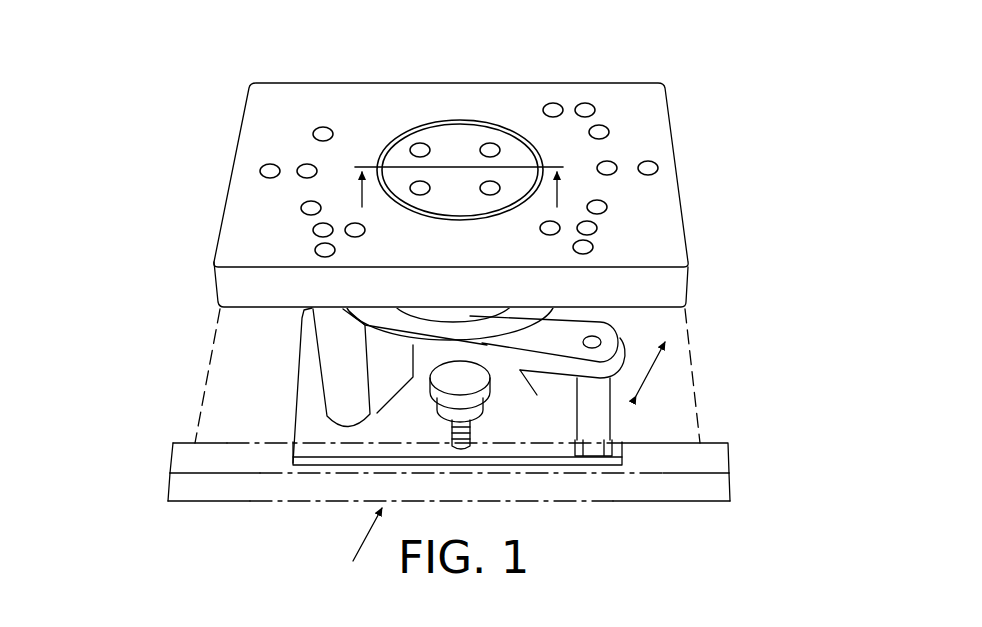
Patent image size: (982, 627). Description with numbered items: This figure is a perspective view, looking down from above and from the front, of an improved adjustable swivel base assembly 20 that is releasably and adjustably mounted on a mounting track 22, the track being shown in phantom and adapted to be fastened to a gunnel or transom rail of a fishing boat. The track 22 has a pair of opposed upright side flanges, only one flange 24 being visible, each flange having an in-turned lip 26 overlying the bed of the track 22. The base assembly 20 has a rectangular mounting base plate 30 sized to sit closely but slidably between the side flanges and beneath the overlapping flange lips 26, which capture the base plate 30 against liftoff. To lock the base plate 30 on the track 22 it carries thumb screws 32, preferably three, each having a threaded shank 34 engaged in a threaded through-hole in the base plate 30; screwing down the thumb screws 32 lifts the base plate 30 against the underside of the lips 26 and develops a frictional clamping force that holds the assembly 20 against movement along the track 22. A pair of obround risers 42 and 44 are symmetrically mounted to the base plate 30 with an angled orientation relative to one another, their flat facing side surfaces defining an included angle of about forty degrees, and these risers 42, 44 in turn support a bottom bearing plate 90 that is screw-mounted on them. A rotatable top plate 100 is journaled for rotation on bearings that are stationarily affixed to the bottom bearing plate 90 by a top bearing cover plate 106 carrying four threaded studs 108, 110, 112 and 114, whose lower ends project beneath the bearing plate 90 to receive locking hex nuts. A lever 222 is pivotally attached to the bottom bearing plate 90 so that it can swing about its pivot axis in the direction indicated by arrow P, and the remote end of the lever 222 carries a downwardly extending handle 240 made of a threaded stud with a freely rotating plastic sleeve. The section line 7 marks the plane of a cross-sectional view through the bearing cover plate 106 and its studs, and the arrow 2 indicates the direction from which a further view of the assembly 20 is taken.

The adjustable swivel base assembly 20 is at (195, 82).
The rotatable top plate 100 is at (240, 212).
The top bearing cover plate 106 is at (453, 142).
The threaded stud 108 is at (397, 152).
The threaded stud 110 is at (418, 146).
The threaded stud 112 is at (496, 192).
The threaded stud 114 is at (491, 147).
The section line 7- 7 is at (460, 189).
The bottom bearing plate 90 is at (385, 322).
The mounting base plate 30 is at (296, 405).
The obround riser 42 is at (348, 417).
The obround riser 44 is at (563, 410).
The lever 222 is at (570, 335).
The handle 240 is at (612, 422).
The arrow indicating pivotal swinging motion P is at (660, 372).
The thumb screw 32 is at (494, 402).
The threaded shank 34 is at (472, 436).
The mounting track 22 is at (170, 446).
The side flange 24 is at (168, 491).
The in-turned lip 26 is at (222, 452).
The view direction arrow 2 is at (360, 540).